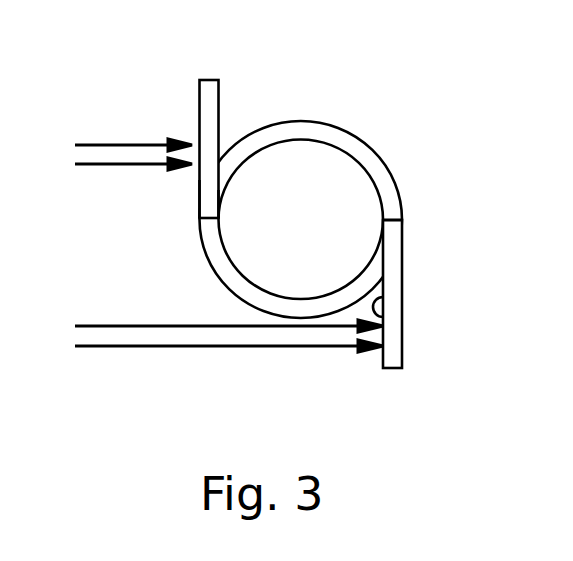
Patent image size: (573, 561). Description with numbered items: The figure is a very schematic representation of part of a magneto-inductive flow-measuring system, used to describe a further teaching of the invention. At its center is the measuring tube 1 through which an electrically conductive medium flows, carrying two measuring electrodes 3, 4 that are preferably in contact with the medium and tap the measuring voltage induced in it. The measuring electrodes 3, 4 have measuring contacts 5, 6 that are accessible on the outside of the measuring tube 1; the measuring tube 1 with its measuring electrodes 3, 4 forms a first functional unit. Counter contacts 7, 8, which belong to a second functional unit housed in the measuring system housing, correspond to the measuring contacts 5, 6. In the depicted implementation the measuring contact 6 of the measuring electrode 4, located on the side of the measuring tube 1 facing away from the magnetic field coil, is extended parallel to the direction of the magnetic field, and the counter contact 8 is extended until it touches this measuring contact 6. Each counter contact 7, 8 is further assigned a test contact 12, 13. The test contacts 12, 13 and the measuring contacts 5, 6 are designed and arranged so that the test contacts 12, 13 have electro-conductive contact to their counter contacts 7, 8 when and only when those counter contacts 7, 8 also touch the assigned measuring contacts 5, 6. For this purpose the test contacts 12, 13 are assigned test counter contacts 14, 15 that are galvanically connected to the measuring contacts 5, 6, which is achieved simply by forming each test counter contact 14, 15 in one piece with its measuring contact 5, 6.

The measuring tube 1 is at (367, 157).
The measuring electrode 3 is at (218, 205).
The measuring electrode 4 is at (392, 240).
The measuring contact 5 is at (199, 193).
The measuring contact 6 is at (383, 318).
The counter contact 7 is at (117, 168).
The counter contact 8 is at (113, 323).
The test contact 12 is at (135, 143).
The test contact 13 is at (118, 347).
The test counter contact 14 is at (210, 97).
The test counter contact 15 is at (395, 358).